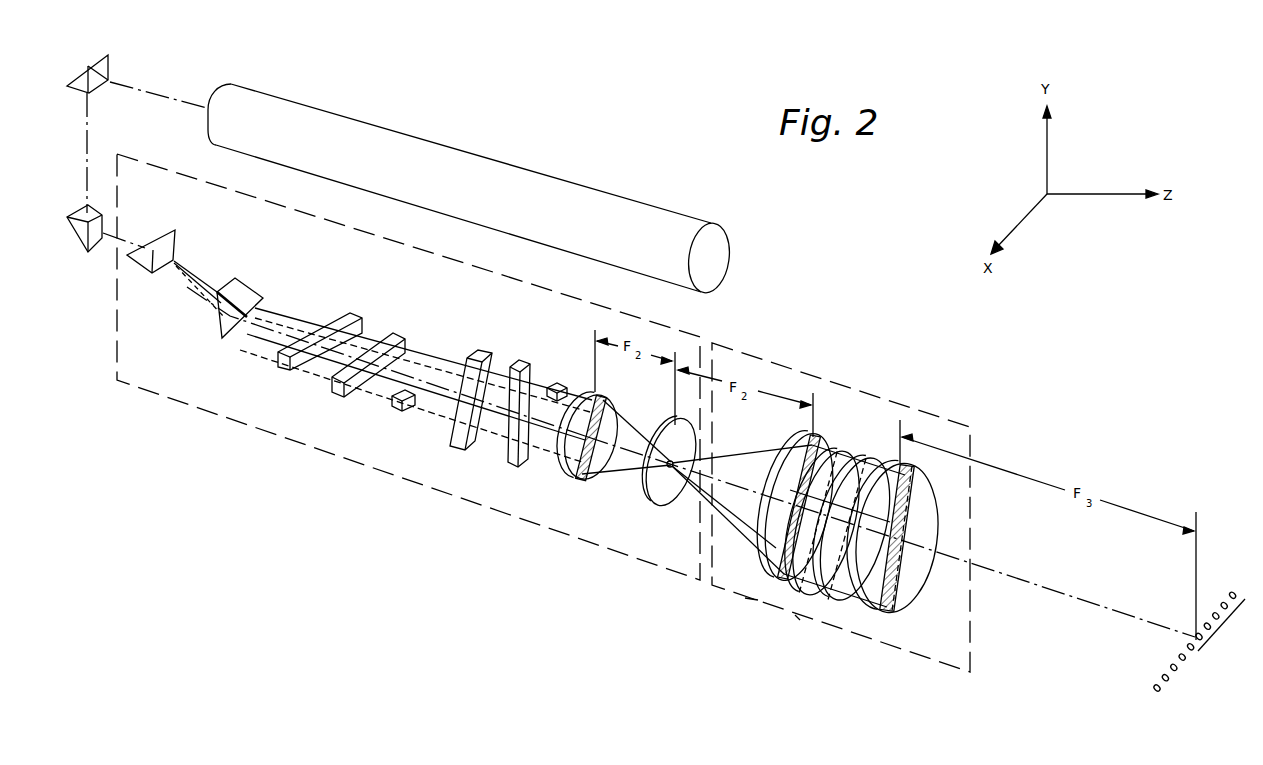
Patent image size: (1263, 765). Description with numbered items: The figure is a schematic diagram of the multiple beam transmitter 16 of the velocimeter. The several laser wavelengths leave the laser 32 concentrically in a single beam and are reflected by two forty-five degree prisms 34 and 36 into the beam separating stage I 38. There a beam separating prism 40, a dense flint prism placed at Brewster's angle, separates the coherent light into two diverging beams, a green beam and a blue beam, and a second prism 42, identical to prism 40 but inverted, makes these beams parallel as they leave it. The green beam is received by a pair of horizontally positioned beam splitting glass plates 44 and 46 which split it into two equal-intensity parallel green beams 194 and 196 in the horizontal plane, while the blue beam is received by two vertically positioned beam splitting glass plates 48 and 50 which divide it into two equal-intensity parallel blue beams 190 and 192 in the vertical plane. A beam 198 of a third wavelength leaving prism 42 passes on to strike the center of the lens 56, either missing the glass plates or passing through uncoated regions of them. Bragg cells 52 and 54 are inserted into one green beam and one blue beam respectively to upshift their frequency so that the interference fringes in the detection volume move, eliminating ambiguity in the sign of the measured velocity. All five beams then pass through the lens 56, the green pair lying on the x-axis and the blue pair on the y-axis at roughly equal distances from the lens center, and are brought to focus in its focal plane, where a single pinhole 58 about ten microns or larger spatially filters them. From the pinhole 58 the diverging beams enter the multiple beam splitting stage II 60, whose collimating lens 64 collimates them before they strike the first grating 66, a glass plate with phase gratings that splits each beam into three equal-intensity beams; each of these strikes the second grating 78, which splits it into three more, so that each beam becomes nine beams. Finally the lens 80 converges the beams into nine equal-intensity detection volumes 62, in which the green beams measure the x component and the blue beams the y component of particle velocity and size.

The optical system 16 is at (837, 308).
The laser 32 is at (348, 124).
The 45° prism 34 is at (102, 67).
The 45° prism 36 is at (80, 213).
The stage I 38 is at (408, 367).
The beam separating prism 40 is at (135, 268).
The second prism 42 is at (243, 290).
The horizontally positioned beam splitting glass plate 44 is at (346, 318).
The horizontally positioned beam splitting glass plate 46 is at (356, 389).
The vertically positioned beam splitting glass plate 48 is at (450, 444).
The vertically positioned beam splitting glass plate 50 is at (517, 361).
The Bragg cell 52 is at (407, 410).
The Bragg cell 54 is at (557, 383).
The lens 56 is at (587, 478).
The pinhole 58 is at (641, 473).
The stage II 60 is at (841, 510).
The detection volumes 62 is at (1208, 650).
The collimating lens 64 is at (785, 453).
The first grating 66 is at (843, 452).
The grating 78 is at (885, 462).
The lens 80 is at (928, 485).
The blue beam 190 is at (548, 440).
The blue beam 192 is at (540, 385).
The green beam 194 is at (437, 369).
The green beam 196 is at (376, 392).
The third wavelength beam 198 is at (288, 333).